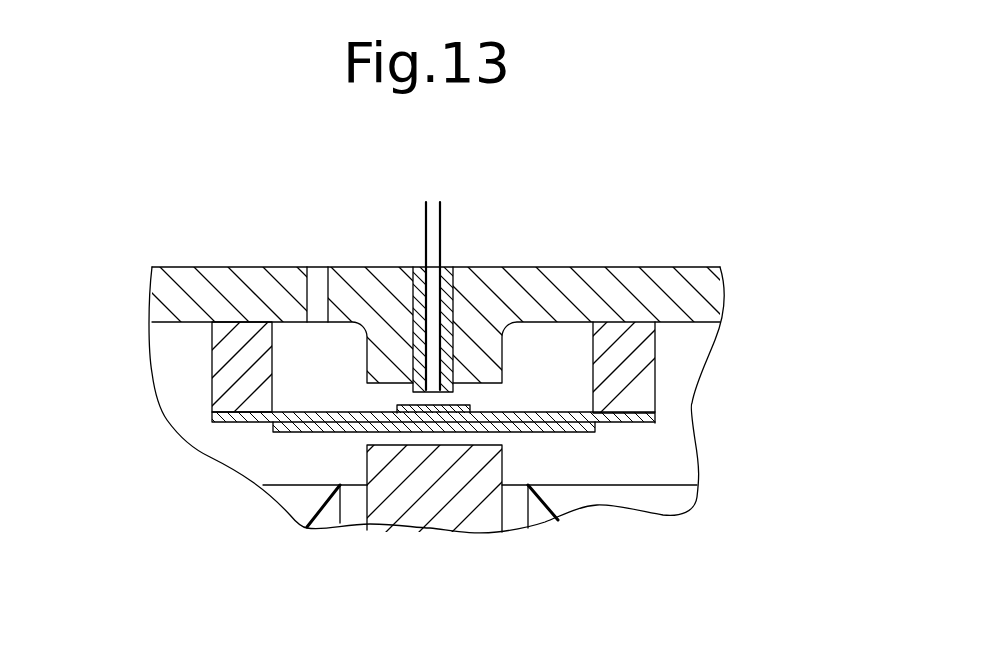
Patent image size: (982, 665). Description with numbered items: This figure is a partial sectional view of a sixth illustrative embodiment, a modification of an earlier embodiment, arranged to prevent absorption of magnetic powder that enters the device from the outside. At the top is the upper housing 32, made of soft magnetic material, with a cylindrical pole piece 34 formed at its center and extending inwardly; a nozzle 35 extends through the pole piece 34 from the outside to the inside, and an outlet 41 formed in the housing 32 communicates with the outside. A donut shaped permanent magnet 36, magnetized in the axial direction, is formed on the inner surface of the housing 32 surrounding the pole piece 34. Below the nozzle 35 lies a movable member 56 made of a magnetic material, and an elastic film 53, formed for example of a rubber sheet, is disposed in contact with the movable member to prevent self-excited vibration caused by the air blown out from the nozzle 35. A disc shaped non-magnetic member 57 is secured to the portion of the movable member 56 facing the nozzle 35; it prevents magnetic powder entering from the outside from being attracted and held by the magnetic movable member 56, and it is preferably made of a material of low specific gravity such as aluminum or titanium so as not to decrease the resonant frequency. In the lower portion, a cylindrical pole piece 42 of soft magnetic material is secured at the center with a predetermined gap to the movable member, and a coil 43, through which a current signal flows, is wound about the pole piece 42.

The upper housing 32 is at (705, 280).
The pole piece 34 is at (472, 353).
The nozzle 35 is at (433, 340).
The permanent magnet 36 is at (632, 370).
The outlet 41 is at (317, 283).
The pole piece 42 is at (443, 513).
The coil 43 is at (565, 502).
The elastic film 53 is at (307, 432).
The movable member 56 is at (627, 425).
The non-magnetic member 57 is at (397, 407).